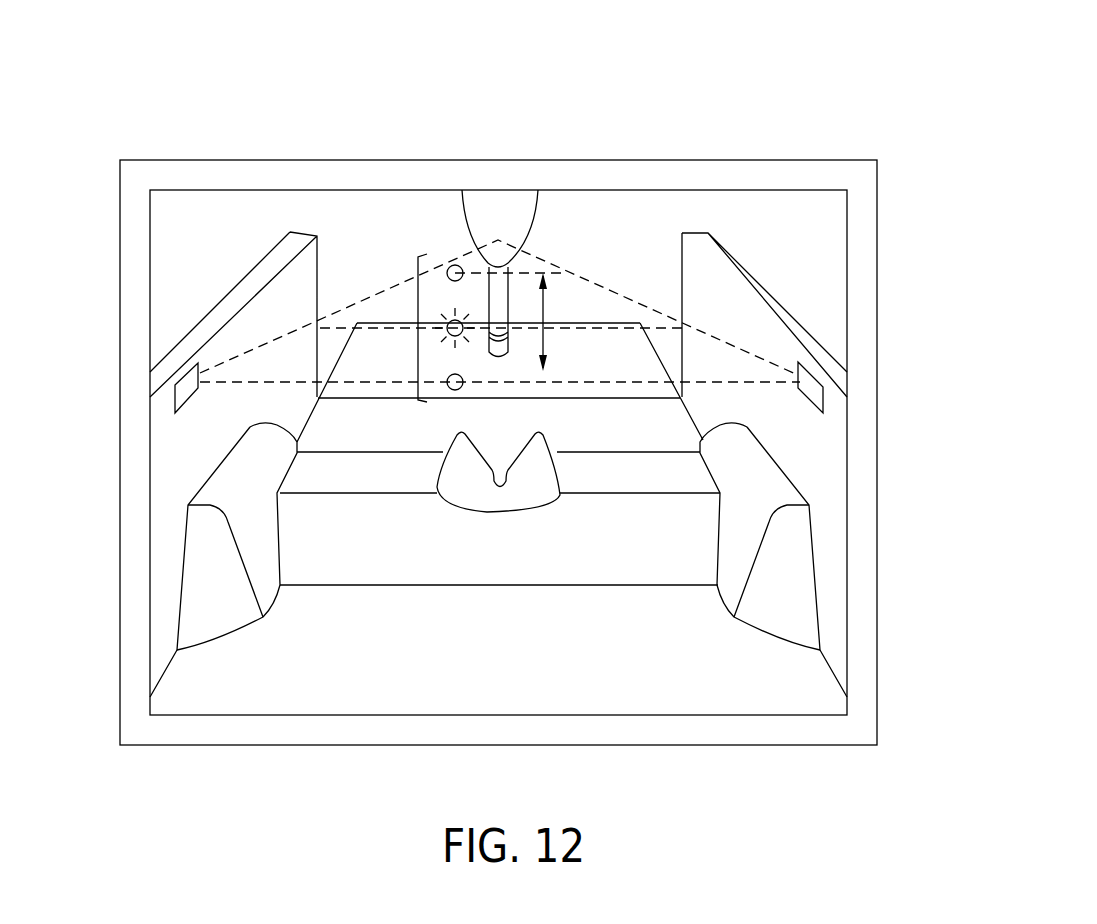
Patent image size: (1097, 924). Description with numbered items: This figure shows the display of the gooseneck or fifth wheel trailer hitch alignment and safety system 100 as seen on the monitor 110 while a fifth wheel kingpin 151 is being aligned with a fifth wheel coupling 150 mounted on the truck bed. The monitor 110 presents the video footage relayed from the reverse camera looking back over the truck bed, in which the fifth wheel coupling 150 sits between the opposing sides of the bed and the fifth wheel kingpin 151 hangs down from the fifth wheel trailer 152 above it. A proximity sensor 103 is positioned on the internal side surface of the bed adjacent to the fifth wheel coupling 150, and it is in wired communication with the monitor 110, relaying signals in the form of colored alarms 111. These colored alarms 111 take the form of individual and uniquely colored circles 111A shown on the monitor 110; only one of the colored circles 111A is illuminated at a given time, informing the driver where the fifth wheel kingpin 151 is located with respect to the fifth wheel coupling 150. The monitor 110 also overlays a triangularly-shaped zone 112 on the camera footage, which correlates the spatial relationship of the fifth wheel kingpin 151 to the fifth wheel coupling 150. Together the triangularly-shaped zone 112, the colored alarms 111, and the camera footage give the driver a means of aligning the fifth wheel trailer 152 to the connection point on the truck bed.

The trailer hitch alignment and safety system 100 is at (727, 100).
The monitor 110 is at (213, 160).
The proximity sensor 103 is at (183, 388).
The colored alarms 111 is at (418, 316).
The colored circles 111A is at (450, 265).
The triangularly-shaped zone 112 is at (632, 303).
The fifth wheel coupling 150 is at (520, 503).
The fifth wheel kingpin 151 is at (511, 355).
The fifth wheel trailer 152 is at (531, 227).